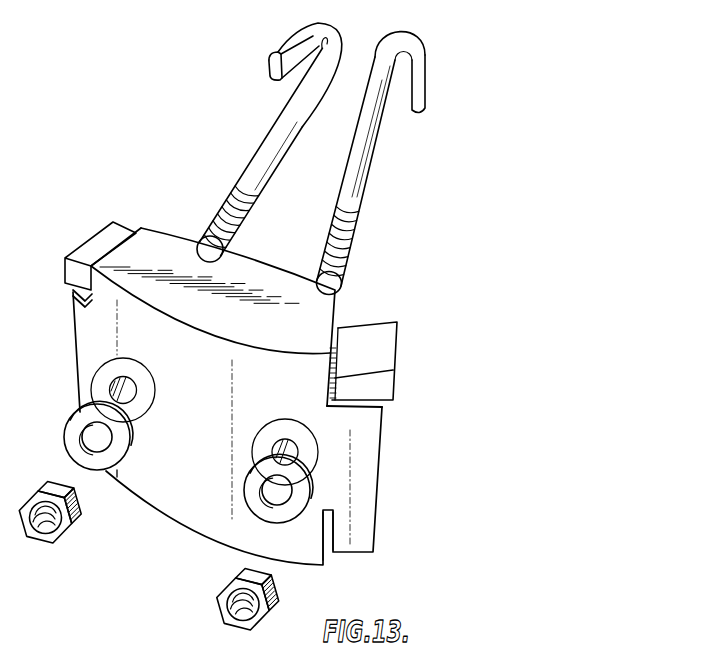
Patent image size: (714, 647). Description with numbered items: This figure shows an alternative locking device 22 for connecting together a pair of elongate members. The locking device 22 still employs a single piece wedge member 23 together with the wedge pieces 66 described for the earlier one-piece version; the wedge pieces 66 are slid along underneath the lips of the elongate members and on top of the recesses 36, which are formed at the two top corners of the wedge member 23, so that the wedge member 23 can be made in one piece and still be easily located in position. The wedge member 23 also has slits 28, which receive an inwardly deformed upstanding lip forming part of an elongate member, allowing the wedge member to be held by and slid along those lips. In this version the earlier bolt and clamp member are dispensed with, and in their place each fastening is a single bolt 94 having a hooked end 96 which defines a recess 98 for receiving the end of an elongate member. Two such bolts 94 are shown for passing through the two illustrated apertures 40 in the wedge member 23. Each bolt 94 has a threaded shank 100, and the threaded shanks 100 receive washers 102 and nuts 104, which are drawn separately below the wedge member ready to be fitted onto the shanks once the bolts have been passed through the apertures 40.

The locking device 22 is at (239, 324).
The wedge member 23 is at (387, 424).
The slits 28 is at (104, 476).
The recesses 36 is at (129, 233).
The apertures 40 is at (123, 383).
The wedge pieces 66 is at (88, 252).
The bolt 94 is at (328, 159).
The hooked end 96 is at (279, 50).
The recess 98 is at (300, 75).
The threaded shanks 100 is at (241, 226).
The washers 102 is at (72, 423).
The nuts 104 is at (74, 528).